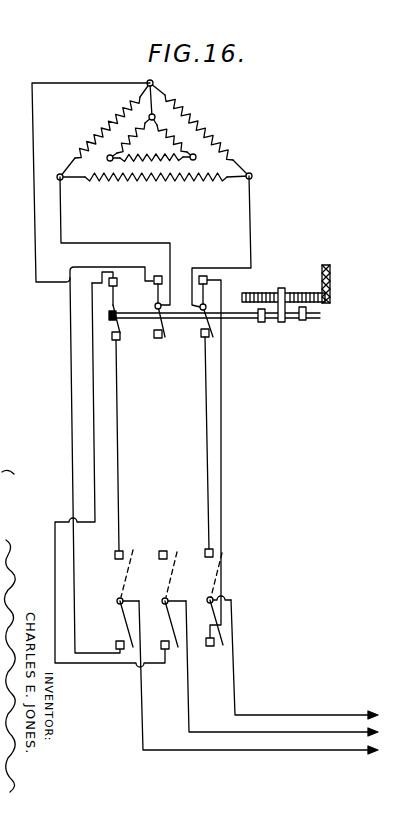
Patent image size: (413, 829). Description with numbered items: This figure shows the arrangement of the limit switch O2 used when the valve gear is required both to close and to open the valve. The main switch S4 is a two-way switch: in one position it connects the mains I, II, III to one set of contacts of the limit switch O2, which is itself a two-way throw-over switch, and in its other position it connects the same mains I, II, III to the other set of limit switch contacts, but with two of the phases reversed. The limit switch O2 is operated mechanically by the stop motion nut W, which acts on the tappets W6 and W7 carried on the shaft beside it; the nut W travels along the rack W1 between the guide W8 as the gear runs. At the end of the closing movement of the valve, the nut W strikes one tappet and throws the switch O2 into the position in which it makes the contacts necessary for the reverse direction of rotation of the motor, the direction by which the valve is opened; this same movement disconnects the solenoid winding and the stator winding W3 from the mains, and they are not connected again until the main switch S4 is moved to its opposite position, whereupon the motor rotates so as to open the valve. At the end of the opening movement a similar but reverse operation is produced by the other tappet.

The resistance windings (delta connected) W3 is at (227, 131).
The stop motion nut W is at (280, 288).
The rack W1 is at (254, 291).
The tappet W6 is at (258, 325).
The tappet W7 is at (303, 320).
The guide block W8 is at (327, 265).
The limit switch O2 is at (122, 330).
The main switch S4 is at (123, 620).
The main I is at (310, 662).
The main II is at (289, 671).
The main III is at (267, 680).